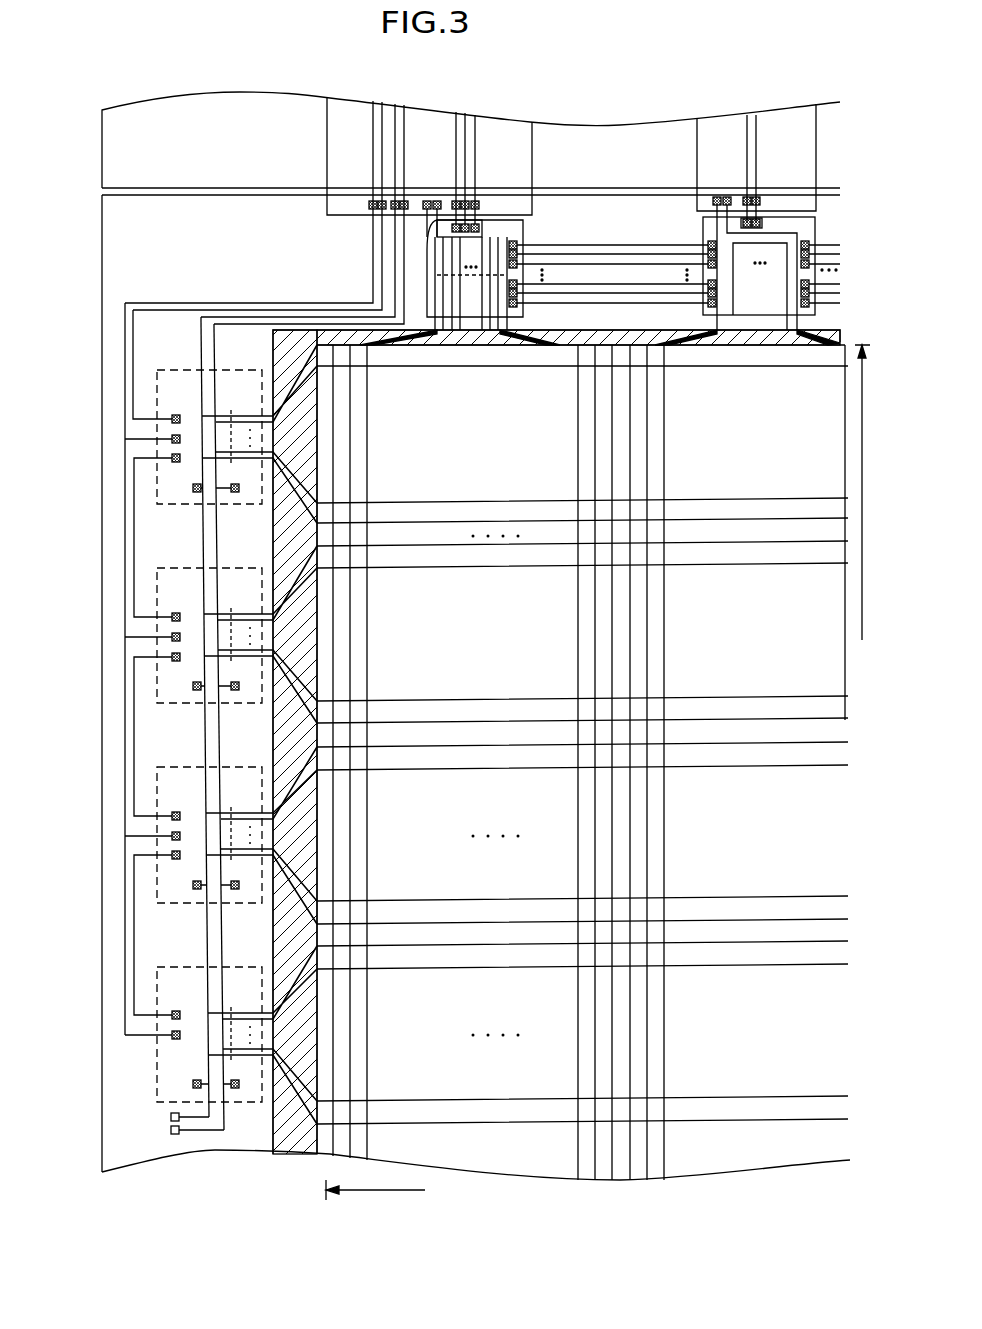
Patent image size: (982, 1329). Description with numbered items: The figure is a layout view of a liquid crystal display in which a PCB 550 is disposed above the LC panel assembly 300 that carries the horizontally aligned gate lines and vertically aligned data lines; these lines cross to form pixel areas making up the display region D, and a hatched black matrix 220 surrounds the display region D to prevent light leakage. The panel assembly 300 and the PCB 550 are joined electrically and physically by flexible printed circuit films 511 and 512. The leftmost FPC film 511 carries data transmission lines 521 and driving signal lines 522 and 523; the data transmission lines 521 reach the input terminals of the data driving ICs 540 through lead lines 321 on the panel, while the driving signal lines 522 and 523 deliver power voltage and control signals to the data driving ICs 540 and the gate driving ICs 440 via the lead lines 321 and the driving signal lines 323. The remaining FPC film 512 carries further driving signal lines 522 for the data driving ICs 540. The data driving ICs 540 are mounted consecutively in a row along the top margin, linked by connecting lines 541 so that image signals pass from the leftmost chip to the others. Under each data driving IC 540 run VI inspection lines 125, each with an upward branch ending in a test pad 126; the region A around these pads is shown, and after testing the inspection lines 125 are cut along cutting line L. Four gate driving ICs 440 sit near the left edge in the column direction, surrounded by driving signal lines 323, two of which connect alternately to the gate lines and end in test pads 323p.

The LC panel assembly 300 is at (101, 238).
The PCB 550 is at (102, 145).
The FPC film 511 is at (327, 131).
The FPC film 512 is at (817, 118).
The data transmission lines 521 is at (456, 125).
The driving signal lines 522 is at (477, 126).
The driving signal lines 523 is at (405, 104).
The test pad 126 is at (427, 200).
The lead lines 321 is at (478, 210).
The VI inspection lines 125 is at (510, 240).
The connecting lines 541 is at (603, 245).
The data driving ICs 540 is at (815, 226).
The driving signal lines 323 is at (125, 322).
The test pad 323p is at (170, 1117).
The gate driving ICs 440 is at (157, 592).
The black matrix 220 is at (300, 1152).
The pad region A is at (425, 240).
The cutting line L is at (437, 276).
The display region D is at (598, 773).